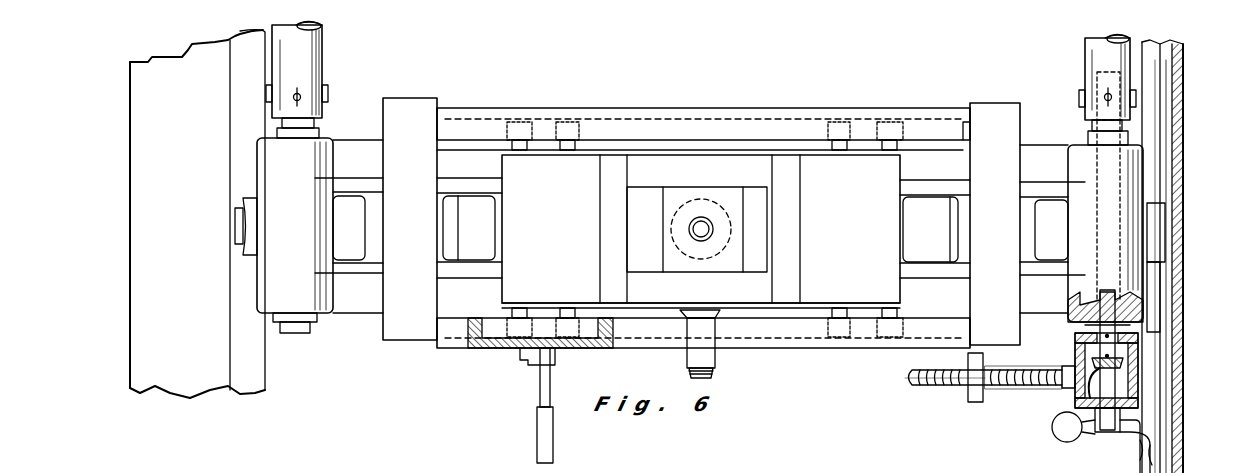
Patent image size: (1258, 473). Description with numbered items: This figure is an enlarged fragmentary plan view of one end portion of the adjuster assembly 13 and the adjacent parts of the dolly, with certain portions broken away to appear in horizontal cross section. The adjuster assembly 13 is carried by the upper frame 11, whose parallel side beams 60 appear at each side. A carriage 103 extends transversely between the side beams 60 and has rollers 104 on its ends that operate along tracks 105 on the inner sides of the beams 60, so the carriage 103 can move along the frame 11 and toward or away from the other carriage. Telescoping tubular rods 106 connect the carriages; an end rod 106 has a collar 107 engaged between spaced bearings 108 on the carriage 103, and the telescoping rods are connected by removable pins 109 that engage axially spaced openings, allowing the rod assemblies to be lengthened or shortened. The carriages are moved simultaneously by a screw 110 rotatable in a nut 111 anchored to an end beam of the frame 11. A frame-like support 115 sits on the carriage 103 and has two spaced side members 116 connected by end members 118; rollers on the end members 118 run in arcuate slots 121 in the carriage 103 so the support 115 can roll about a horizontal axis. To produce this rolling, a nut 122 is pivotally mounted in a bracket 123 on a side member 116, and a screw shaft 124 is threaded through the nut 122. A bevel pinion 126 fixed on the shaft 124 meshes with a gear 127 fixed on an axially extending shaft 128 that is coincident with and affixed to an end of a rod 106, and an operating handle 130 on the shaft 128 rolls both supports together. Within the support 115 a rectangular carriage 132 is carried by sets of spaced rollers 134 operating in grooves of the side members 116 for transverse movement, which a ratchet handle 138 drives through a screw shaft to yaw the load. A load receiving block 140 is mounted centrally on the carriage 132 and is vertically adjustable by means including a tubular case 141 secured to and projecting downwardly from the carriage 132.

The upper frame 11 is at (1190, 136).
The adjuster assembly 13 is at (1053, 393).
The side beam 60 is at (188, 282).
The carriage 103 is at (360, 268).
The roller 104 is at (250, 210).
The track 105 is at (243, 378).
The telescoping tubular rod 106 is at (322, 58).
The collar 107 is at (1135, 326).
The bearing 108 is at (1135, 337).
The removable pin 109 is at (1105, 97).
The screw 110 is at (718, 374).
The nut 111 is at (685, 330).
The support 115 is at (755, 70).
The side member 116 is at (657, 132).
The end member 118 is at (418, 251).
The arcuate slot 121 is at (945, 425).
The nut 122 is at (965, 388).
The bracket 123 is at (1000, 370).
The screw shaft 124 is at (915, 388).
The bevel pinion 126 is at (1092, 372).
The gear 127 is at (1120, 363).
The shaft 128 is at (1112, 385).
The operating handle 130 is at (1127, 440).
The carriage 132 is at (856, 242).
The roller 134 is at (535, 328).
The ratchet handle 138 is at (550, 450).
The load receiving block 140 is at (757, 207).
The tubular case 141 is at (678, 248).